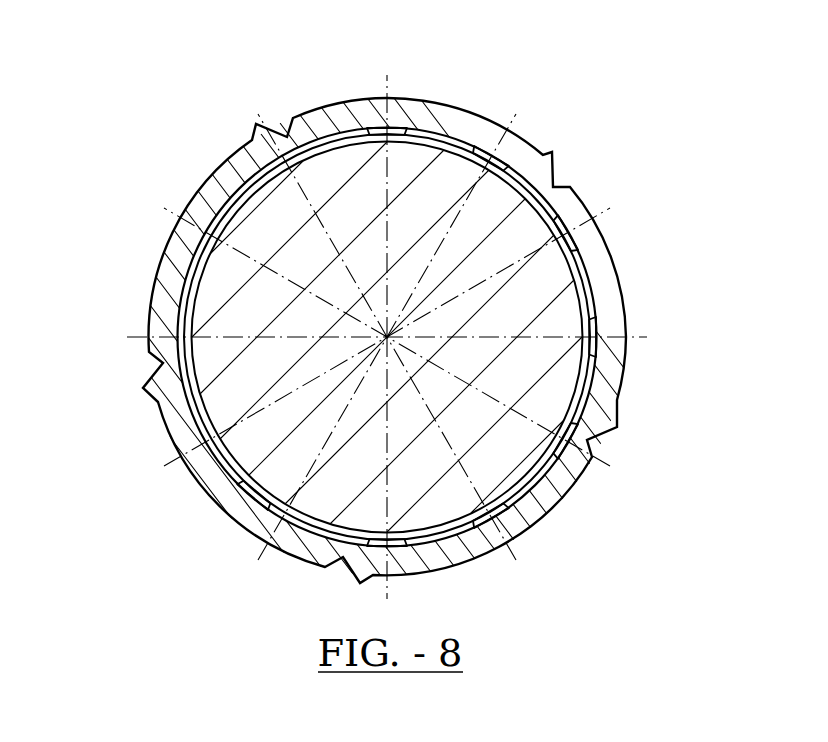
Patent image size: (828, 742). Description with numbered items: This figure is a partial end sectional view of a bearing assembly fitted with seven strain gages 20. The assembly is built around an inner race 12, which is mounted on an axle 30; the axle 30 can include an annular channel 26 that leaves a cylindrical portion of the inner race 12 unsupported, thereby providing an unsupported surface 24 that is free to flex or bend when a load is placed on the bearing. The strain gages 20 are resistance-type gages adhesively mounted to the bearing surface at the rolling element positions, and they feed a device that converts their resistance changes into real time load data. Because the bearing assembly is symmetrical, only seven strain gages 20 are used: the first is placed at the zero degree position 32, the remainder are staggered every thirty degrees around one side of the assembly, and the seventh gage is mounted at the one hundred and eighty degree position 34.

The inner race 12 is at (166, 432).
The strain gages 20 is at (395, 136).
The unsupported surface 24 is at (596, 297).
The channel 26 is at (245, 488).
The axle 30 is at (167, 248).
The zero degree position 32 is at (392, 88).
The one hundred and eighty degree position 34 is at (390, 588).